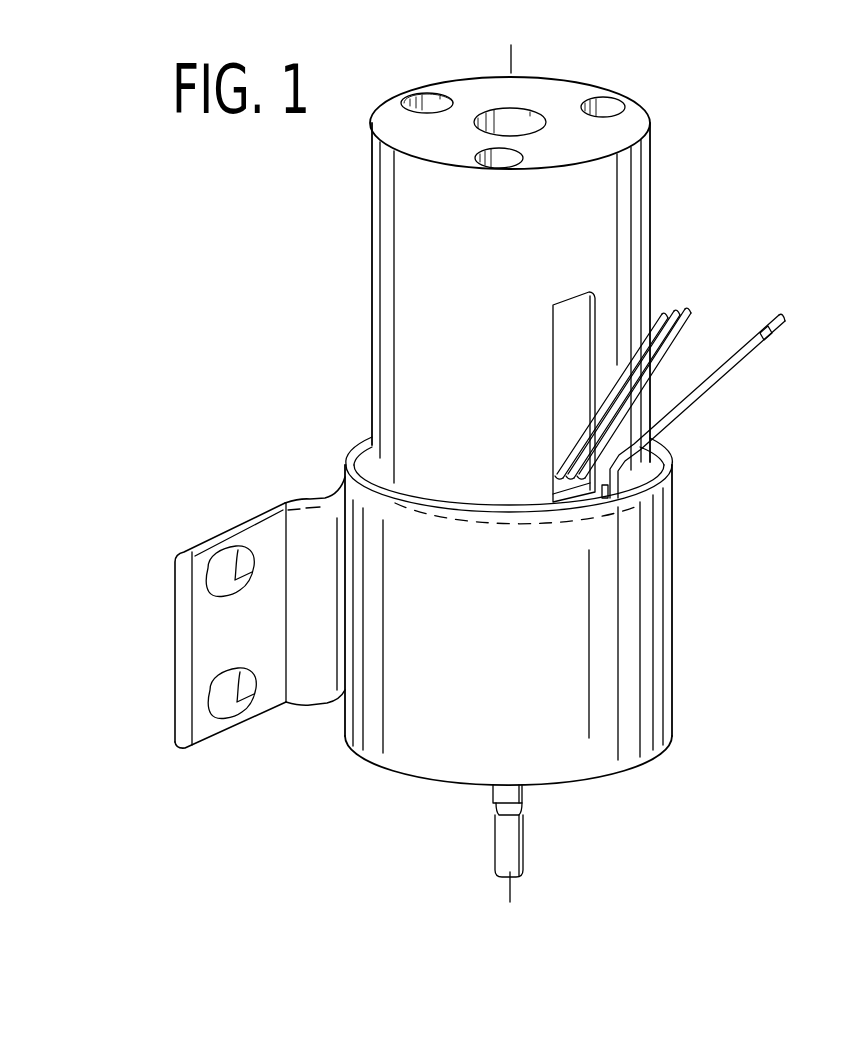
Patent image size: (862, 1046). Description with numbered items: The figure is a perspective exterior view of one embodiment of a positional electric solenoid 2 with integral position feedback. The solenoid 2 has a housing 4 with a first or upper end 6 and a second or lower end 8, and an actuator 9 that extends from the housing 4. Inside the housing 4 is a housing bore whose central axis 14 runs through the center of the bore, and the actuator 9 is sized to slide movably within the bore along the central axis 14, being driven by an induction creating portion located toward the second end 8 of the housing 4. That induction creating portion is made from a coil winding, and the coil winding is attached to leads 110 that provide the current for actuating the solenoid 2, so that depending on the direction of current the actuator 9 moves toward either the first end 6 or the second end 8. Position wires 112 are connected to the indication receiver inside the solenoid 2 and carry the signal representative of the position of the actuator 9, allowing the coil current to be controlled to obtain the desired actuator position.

The positional electric solenoid 2 is at (497, 473).
The housing 4 is at (372, 372).
The first or upper end 6 is at (533, 73).
The second or lower end 8 is at (612, 772).
The actuator 9 is at (515, 847).
The central axis 14 is at (508, 57).
The leads 110 is at (789, 318).
The position wires 112 is at (686, 301).